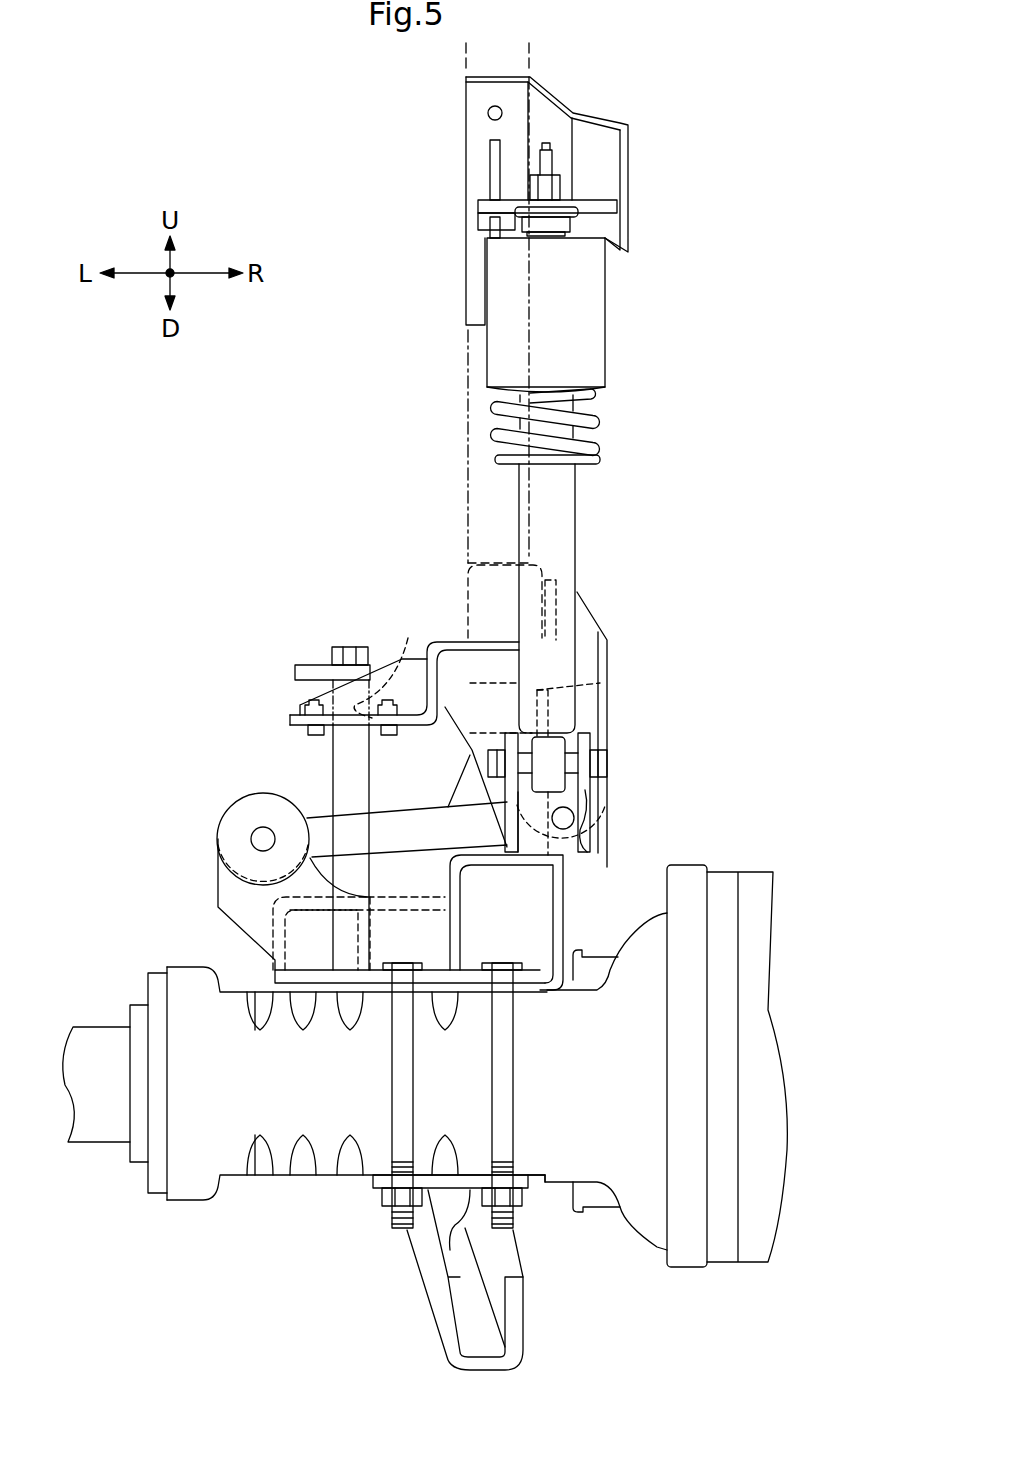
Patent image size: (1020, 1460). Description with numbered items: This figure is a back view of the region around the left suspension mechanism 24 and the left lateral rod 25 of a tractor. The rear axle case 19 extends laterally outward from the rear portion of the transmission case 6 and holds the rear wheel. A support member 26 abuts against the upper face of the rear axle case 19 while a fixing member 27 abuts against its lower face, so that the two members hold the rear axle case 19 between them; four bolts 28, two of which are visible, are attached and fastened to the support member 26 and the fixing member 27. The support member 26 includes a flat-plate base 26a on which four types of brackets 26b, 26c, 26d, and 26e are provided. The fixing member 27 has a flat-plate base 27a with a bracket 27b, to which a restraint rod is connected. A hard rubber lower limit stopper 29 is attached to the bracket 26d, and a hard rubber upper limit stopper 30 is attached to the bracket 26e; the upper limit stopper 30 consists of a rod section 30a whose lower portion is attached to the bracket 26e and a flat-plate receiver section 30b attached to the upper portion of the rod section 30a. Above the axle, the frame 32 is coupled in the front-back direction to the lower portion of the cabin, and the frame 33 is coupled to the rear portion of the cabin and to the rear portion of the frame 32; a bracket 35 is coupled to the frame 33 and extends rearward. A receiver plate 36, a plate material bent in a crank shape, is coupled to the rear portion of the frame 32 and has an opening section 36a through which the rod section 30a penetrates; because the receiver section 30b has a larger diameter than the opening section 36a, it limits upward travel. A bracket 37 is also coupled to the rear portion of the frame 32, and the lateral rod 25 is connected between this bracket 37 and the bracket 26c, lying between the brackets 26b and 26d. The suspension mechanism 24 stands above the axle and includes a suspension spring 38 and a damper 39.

The transmission case 6 is at (767, 877).
The rear axle case 19 is at (193, 978).
The suspension mechanism 24 is at (606, 352).
The lateral rod 25 is at (318, 822).
The support member 26 is at (421, 865).
The base 26a is at (375, 987).
The bracket 26b is at (601, 757).
The bracket 26c is at (225, 890).
The bracket 26d is at (448, 793).
The bracket 26e is at (270, 935).
The fixing member 27 is at (436, 1272).
The base 27a is at (537, 1186).
The bracket 27b is at (430, 1267).
The bolt 28 is at (398, 1108).
The lower limit stopper 29 is at (547, 692).
The upper limit stopper 30 is at (275, 774).
The rod section 30a is at (340, 753).
The receiver section 30b is at (332, 668).
The frame 32 is at (468, 580).
The frame 33 is at (468, 345).
The bracket 35 is at (628, 190).
The receiver plate 36 is at (351, 672).
The opening section 36a is at (410, 652).
The bracket 37 is at (602, 640).
The suspension spring 38 is at (603, 420).
The damper 39 is at (572, 552).